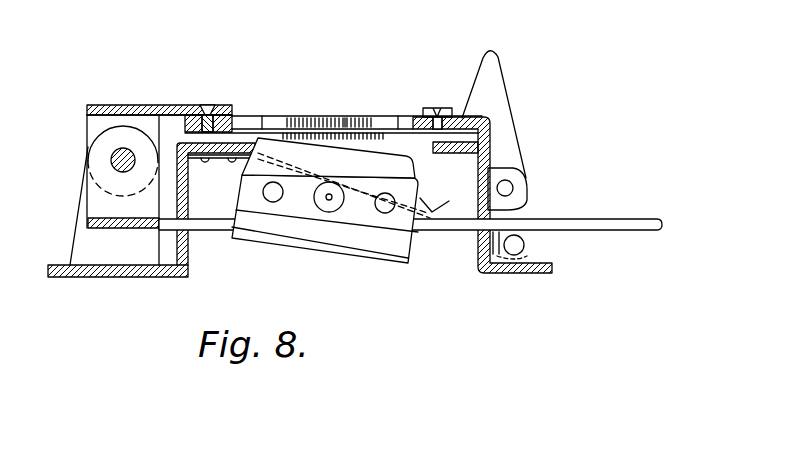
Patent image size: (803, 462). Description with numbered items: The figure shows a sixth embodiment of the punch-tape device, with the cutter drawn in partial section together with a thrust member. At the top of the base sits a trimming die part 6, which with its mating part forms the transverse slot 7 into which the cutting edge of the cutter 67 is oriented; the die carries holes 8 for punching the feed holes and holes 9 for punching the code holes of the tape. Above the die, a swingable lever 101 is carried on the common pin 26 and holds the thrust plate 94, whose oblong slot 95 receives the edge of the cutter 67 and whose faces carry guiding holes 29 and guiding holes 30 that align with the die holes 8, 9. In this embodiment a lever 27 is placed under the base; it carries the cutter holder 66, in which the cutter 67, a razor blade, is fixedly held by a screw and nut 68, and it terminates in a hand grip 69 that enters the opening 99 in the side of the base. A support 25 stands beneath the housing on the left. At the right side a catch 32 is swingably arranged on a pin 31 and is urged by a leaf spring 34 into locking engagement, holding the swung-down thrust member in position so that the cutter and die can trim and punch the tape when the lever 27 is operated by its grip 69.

The swingable lever 101 is at (176, 105).
The common pin 26 is at (110, 160).
The support leg 25 is at (73, 245).
The lever 27 is at (128, 228).
The transverse slot 7 is at (238, 130).
The thrust plate 94 is at (260, 118).
The holes for punching feed holes 8 is at (292, 116).
The guiding holes 29 is at (308, 121).
The holes for punching code holes 9 is at (355, 121).
The guiding holes 30 is at (372, 123).
The oblong slot 95 is at (398, 123).
The trimming die part 6 is at (420, 148).
The opening 99 is at (478, 169).
The catch 32 is at (512, 120).
The pin 31 is at (518, 182).
The hand grip 69 is at (545, 222).
The leaf spring 34 is at (520, 256).
The cutter holder 66 is at (412, 258).
The screw and nut 68 is at (342, 205).
The cutter 67 is at (385, 172).